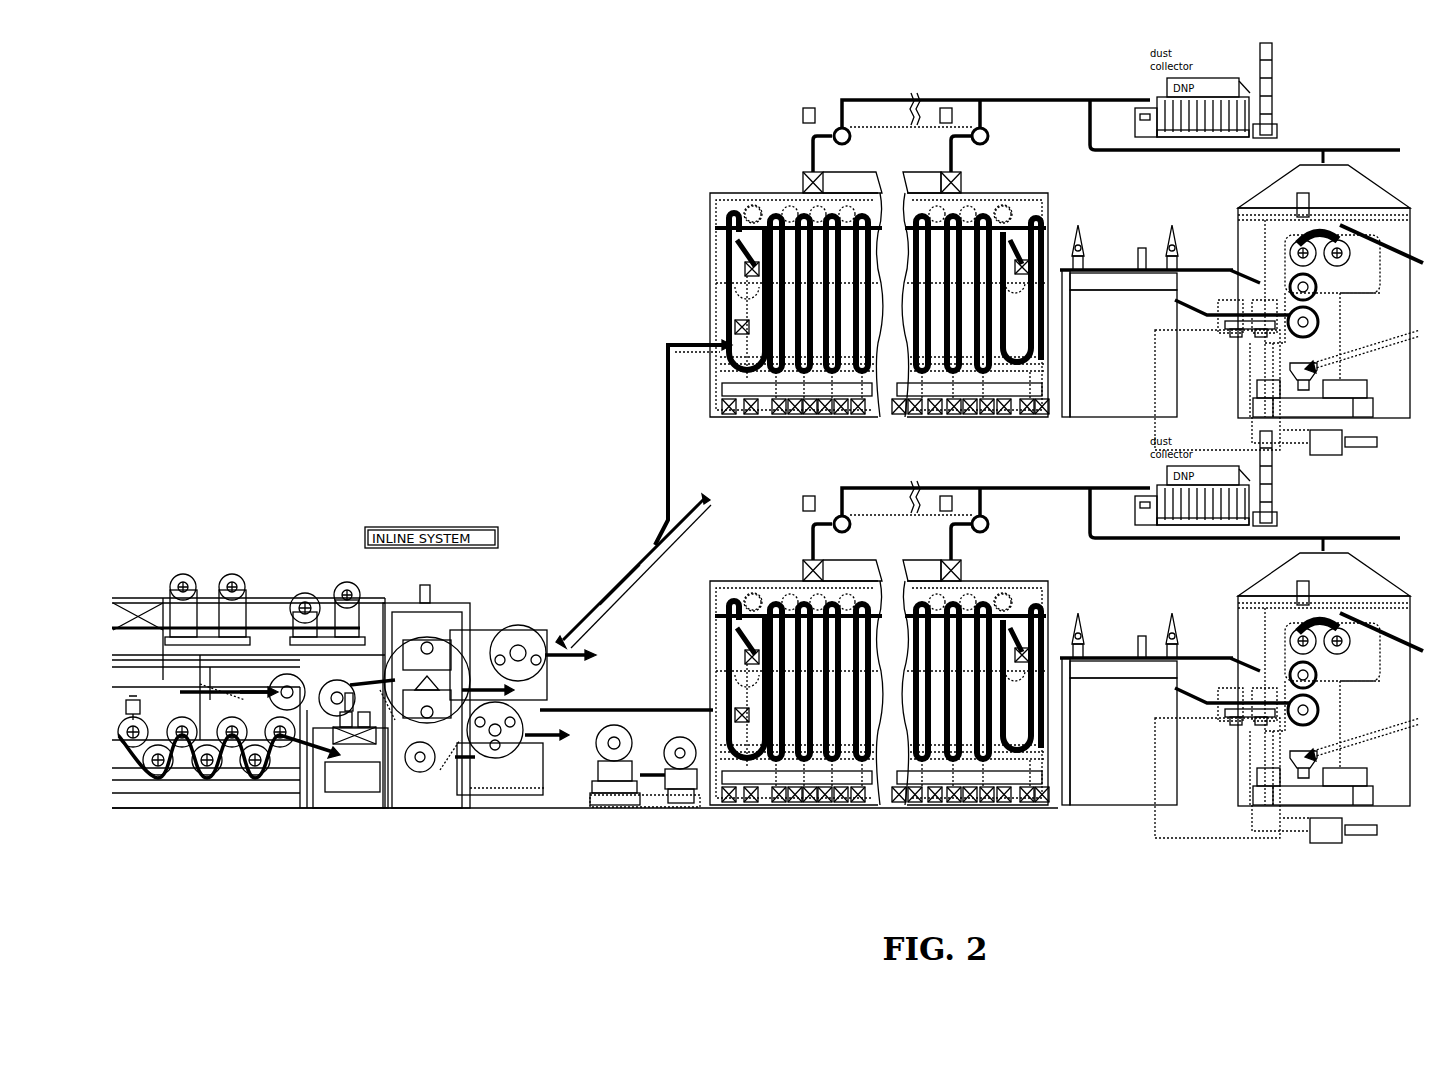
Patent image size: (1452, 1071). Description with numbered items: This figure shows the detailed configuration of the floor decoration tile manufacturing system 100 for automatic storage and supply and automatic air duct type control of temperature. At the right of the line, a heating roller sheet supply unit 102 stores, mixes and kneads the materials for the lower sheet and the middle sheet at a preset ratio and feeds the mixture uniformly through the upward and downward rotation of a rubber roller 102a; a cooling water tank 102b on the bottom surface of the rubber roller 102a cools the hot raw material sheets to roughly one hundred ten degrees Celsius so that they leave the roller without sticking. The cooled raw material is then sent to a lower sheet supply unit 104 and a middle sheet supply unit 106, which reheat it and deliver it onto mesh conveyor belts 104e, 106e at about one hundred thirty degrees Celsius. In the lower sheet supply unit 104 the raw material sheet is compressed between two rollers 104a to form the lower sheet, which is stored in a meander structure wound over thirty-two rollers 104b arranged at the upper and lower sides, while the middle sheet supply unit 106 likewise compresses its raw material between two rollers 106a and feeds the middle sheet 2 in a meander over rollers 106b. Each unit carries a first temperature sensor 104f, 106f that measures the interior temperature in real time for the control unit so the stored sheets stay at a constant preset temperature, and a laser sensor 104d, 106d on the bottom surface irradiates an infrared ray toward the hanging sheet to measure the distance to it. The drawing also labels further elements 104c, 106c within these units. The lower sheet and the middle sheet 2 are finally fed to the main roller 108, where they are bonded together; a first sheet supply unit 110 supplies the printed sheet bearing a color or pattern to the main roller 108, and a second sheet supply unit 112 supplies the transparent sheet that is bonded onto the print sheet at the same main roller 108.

The middle sheet 2 is at (605, 600).
The floor decoration tile manufacturing system 100 is at (1180, 869).
The heating roller sheet supply unit 102 is at (1368, 195).
The rubber roller 102a is at (1220, 330).
The cooling water tank 102b is at (1240, 340).
The lower sheet supply unit 104 is at (1050, 808).
The rollers 104a is at (1084, 643).
The rollers 104b is at (987, 596).
The drying chamber roller 104c is at (746, 596).
The laser sensor 104d is at (775, 802).
The mesh conveyor belt 104e is at (577, 732).
The first temperature sensor 104f is at (692, 808).
The middle sheet supply unit 106 is at (708, 200).
The rollers 106a is at (1084, 255).
The rollers 106b is at (987, 208).
The drying chamber roller 106c is at (746, 208).
The laser sensor 106d is at (752, 414).
The mesh conveyor belt 106e is at (642, 578).
The first temperature sensor 106f is at (722, 340).
The main roller 108 is at (447, 640).
The first sheet supply unit 110 is at (300, 594).
The second sheet supply unit 112 is at (190, 578).